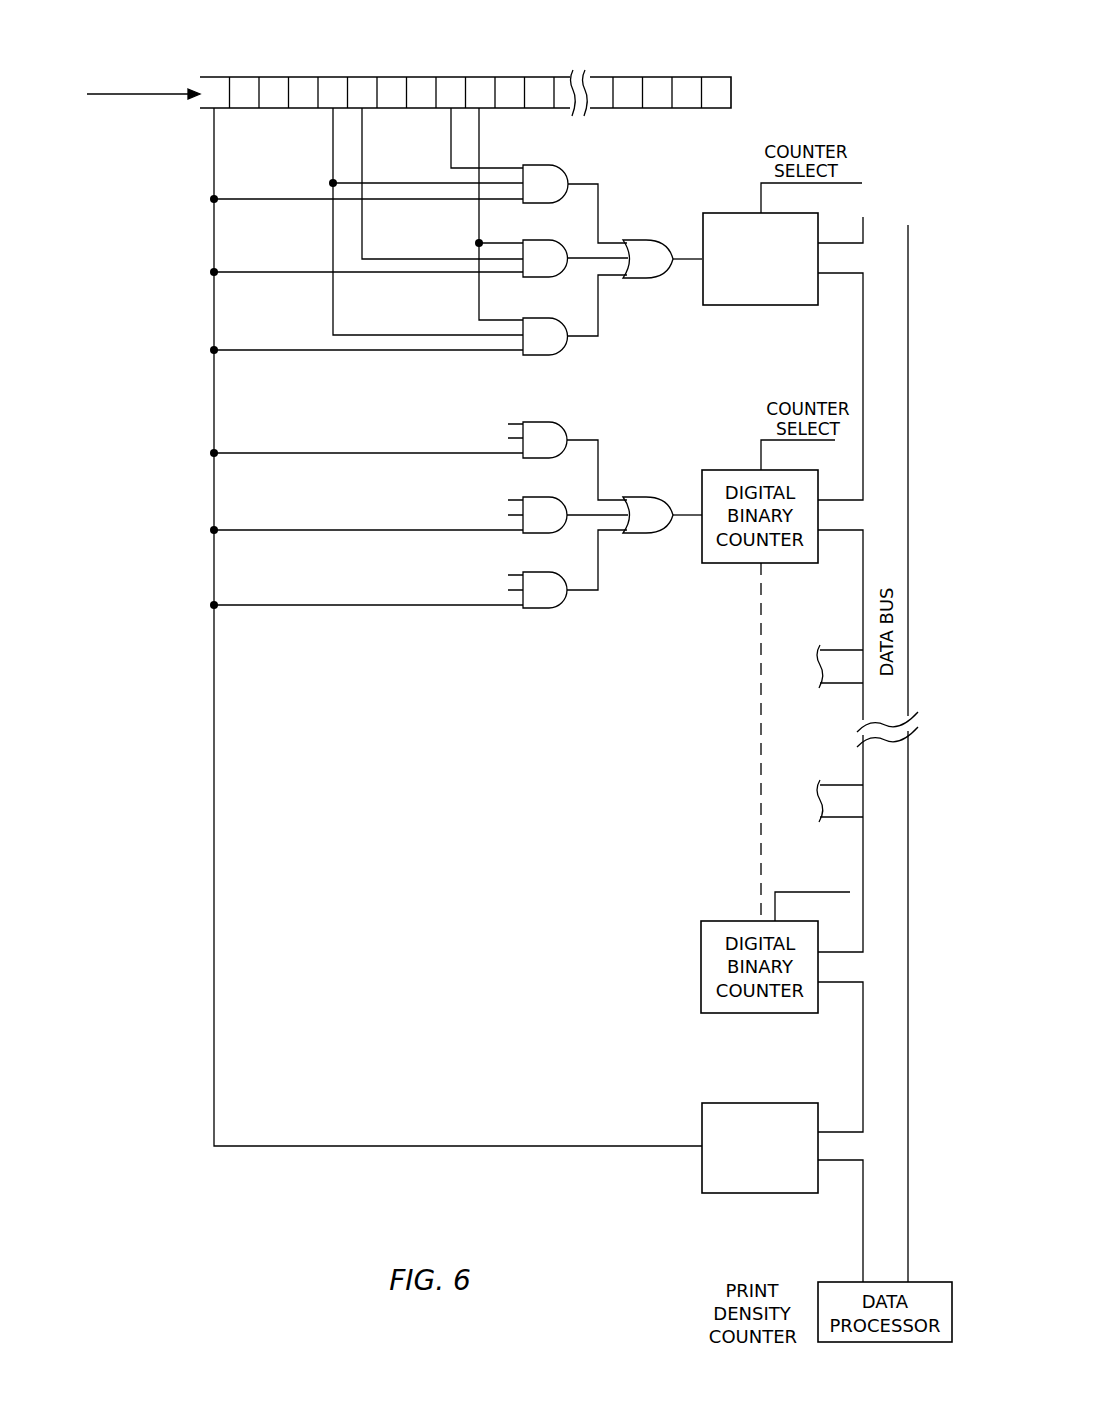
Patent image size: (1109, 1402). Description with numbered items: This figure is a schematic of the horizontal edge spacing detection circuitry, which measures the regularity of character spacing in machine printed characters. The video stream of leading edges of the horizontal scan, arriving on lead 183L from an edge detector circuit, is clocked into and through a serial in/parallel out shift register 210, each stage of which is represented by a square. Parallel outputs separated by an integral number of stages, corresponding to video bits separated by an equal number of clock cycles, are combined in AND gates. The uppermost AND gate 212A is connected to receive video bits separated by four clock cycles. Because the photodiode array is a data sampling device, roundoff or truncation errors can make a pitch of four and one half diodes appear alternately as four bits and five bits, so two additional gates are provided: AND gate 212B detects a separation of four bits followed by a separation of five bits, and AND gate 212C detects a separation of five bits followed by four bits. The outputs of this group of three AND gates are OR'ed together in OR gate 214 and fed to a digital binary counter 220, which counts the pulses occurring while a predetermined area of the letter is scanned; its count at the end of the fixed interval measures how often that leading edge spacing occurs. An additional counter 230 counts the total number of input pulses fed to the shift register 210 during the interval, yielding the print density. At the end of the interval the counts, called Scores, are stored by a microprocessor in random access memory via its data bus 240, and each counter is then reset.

The lead 183L is at (118, 97).
The serial in/parallel out shift register 210 is at (611, 108).
The AND gate 212A is at (560, 174).
The AND gate 212B is at (552, 278).
The AND gate 212C is at (553, 356).
The OR gate 214 is at (630, 281).
The digital binary counter 220 is at (768, 306).
The counter 230 is at (760, 1100).
The data bus 240 is at (884, 237).